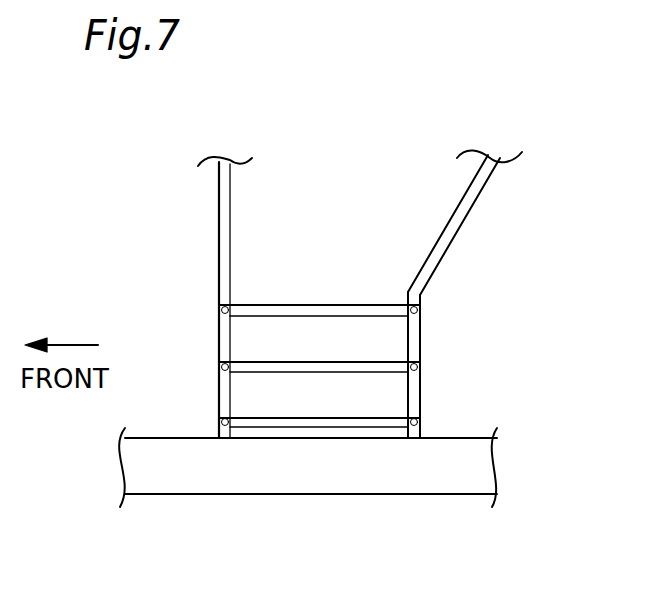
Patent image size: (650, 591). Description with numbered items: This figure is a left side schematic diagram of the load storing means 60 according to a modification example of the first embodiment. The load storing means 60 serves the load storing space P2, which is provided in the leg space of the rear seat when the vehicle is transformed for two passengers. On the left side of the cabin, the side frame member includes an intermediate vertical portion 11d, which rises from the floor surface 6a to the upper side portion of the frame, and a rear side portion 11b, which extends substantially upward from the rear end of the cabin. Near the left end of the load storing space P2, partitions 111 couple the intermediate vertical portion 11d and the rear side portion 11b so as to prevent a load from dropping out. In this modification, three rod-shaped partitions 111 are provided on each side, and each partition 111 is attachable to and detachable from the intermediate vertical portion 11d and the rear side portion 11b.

The floor surface 6a is at (247, 438).
The intermediate vertical portion 11d is at (225, 226).
The rear side portion 11b is at (464, 213).
The partition 111 is at (268, 310).
The load storing means 60 is at (324, 258).
The load storing space P2 is at (143, 297).